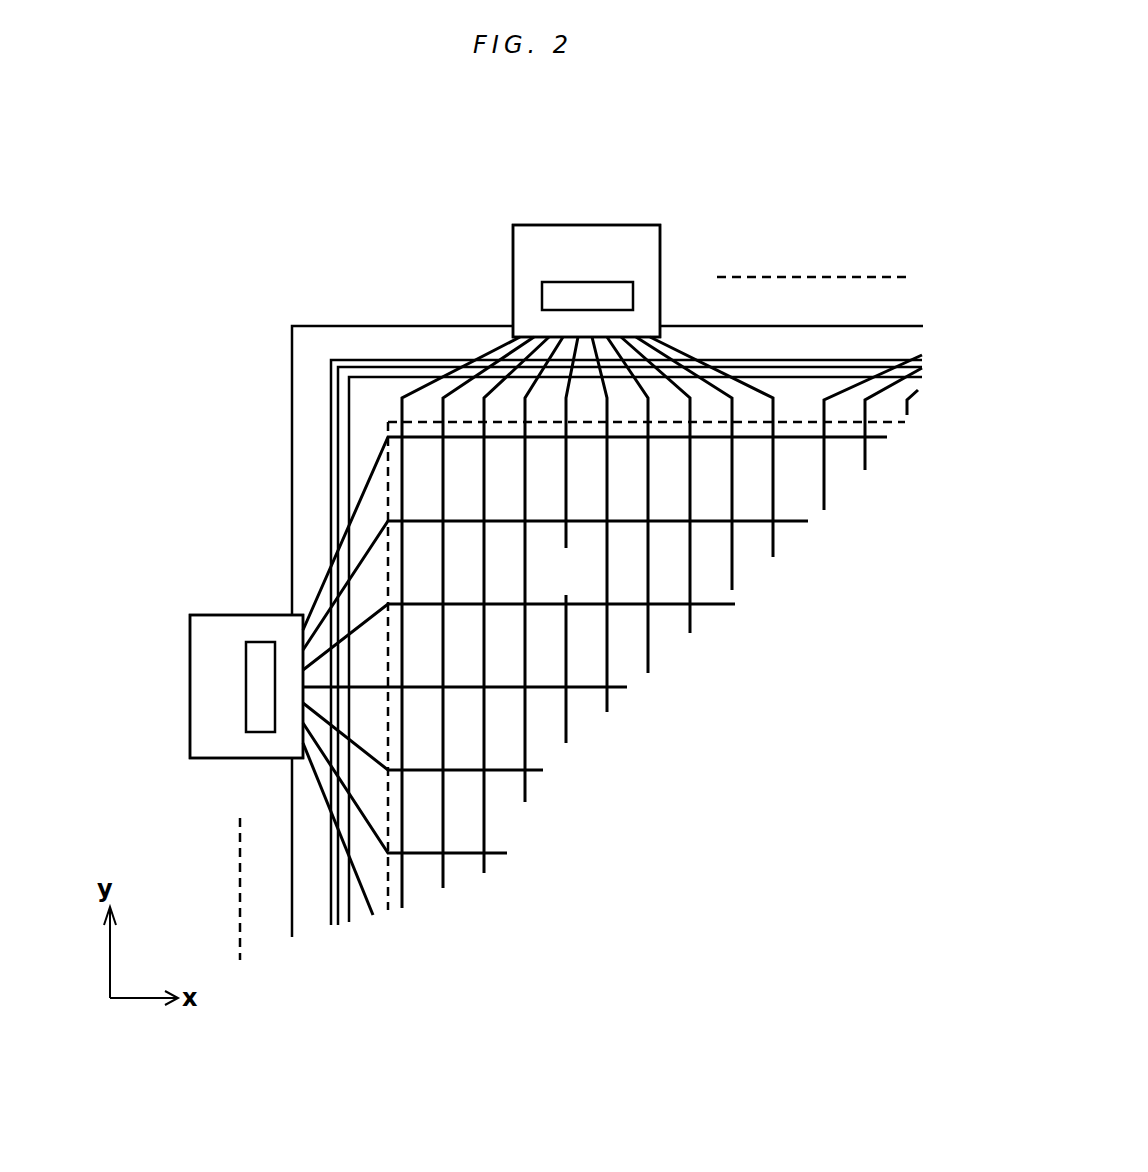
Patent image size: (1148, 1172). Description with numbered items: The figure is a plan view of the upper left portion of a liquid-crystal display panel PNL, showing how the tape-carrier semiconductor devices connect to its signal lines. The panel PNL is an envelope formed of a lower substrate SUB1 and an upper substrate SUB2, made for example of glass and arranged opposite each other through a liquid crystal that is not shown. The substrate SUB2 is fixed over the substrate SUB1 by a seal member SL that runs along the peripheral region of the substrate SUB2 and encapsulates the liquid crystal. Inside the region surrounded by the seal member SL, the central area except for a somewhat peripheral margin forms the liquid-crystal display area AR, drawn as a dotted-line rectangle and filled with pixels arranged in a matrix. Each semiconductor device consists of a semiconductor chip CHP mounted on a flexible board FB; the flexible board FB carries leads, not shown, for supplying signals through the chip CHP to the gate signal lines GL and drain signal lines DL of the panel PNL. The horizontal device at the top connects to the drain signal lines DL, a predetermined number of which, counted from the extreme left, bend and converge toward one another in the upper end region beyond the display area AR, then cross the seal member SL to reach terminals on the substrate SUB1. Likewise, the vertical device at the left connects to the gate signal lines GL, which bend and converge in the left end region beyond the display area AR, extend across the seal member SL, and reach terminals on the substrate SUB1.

The liquid-crystal display panel PNL is at (832, 297).
The substrate SUB1 is at (292, 412).
The substrate SUB2 is at (330, 495).
The seal member SL is at (428, 368).
The flexible board FB is at (640, 237).
The semiconductor chip CHP is at (563, 293).
The liquid-crystal display area AR is at (646, 666).
The drain signal line DL is at (733, 500).
The gate signal line GL is at (665, 523).